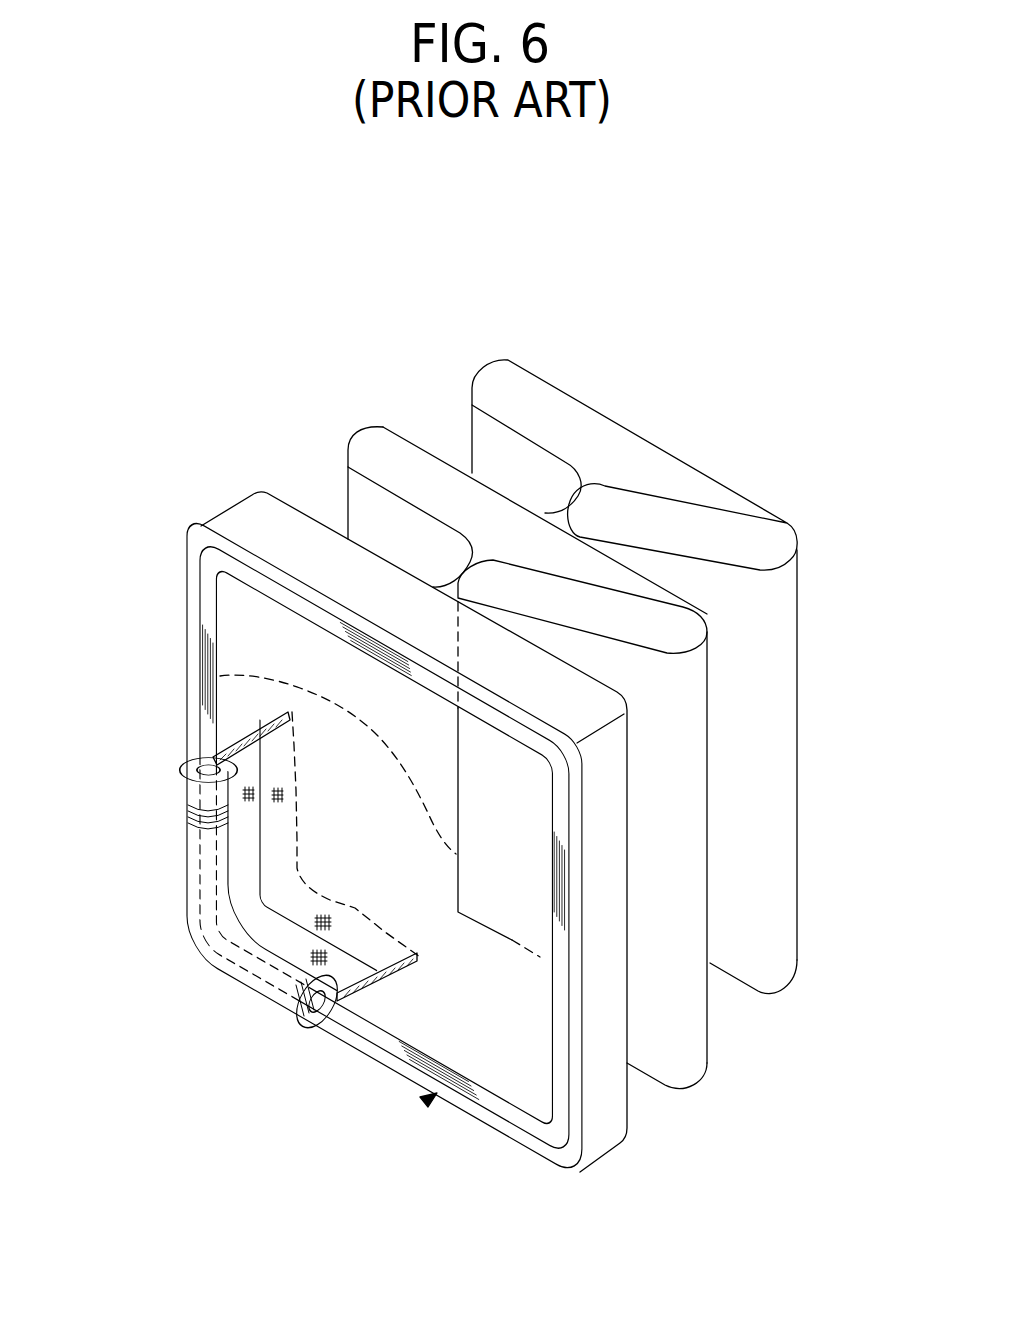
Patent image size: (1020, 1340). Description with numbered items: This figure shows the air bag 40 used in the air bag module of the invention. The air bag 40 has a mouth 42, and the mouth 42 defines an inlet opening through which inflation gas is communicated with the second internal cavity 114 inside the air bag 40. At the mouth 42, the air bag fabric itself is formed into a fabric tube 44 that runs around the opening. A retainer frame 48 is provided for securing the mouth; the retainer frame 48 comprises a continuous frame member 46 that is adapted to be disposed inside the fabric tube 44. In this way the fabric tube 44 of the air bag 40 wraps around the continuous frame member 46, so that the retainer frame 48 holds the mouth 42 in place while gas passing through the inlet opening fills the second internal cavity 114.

The air bag 40 is at (703, 612).
The mouth 42 is at (572, 1152).
The fabric tube 44 is at (218, 948).
The continuous frame member 46 is at (395, 1050).
The retainer frame 48 is at (428, 1103).
The second internal cavity 114 is at (500, 1030).